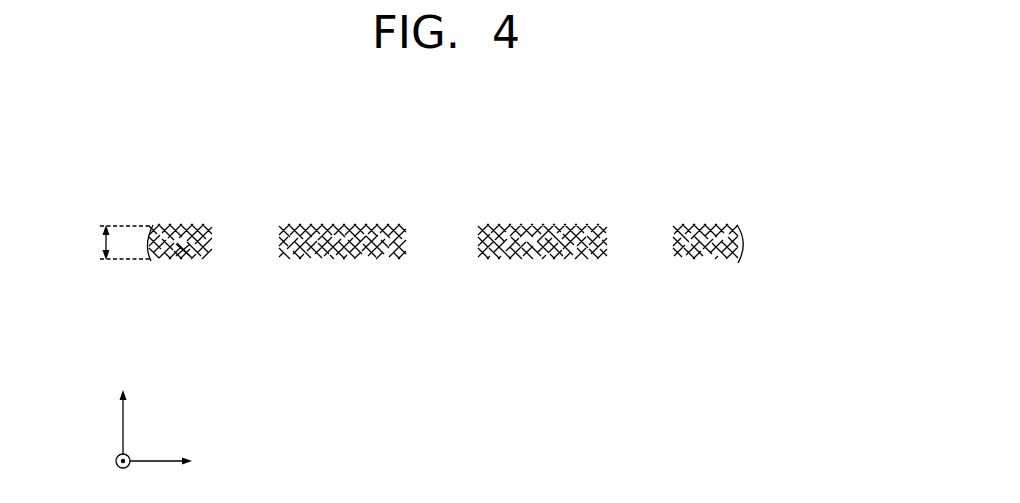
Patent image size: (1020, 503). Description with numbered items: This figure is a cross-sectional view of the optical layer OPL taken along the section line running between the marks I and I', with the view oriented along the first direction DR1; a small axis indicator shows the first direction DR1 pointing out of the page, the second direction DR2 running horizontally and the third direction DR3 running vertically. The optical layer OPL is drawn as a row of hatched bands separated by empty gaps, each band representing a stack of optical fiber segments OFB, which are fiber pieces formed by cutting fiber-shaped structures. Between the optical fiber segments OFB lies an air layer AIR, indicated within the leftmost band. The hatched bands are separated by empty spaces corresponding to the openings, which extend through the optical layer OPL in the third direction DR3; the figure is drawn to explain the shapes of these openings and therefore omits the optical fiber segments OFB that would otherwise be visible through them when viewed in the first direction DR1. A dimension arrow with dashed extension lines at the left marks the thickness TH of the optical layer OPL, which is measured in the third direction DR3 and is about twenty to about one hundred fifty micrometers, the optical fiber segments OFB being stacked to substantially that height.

The optical layer OPL is at (726, 184).
The optical fiber segments OFB is at (170, 226).
The air layer AIR is at (183, 262).
The thickness TH is at (110, 242).
The section line start I is at (149, 259).
The section line end I' is at (744, 260).
The first direction DR1 is at (123, 477).
The second direction DR2 is at (183, 462).
The third direction DR3 is at (123, 411).